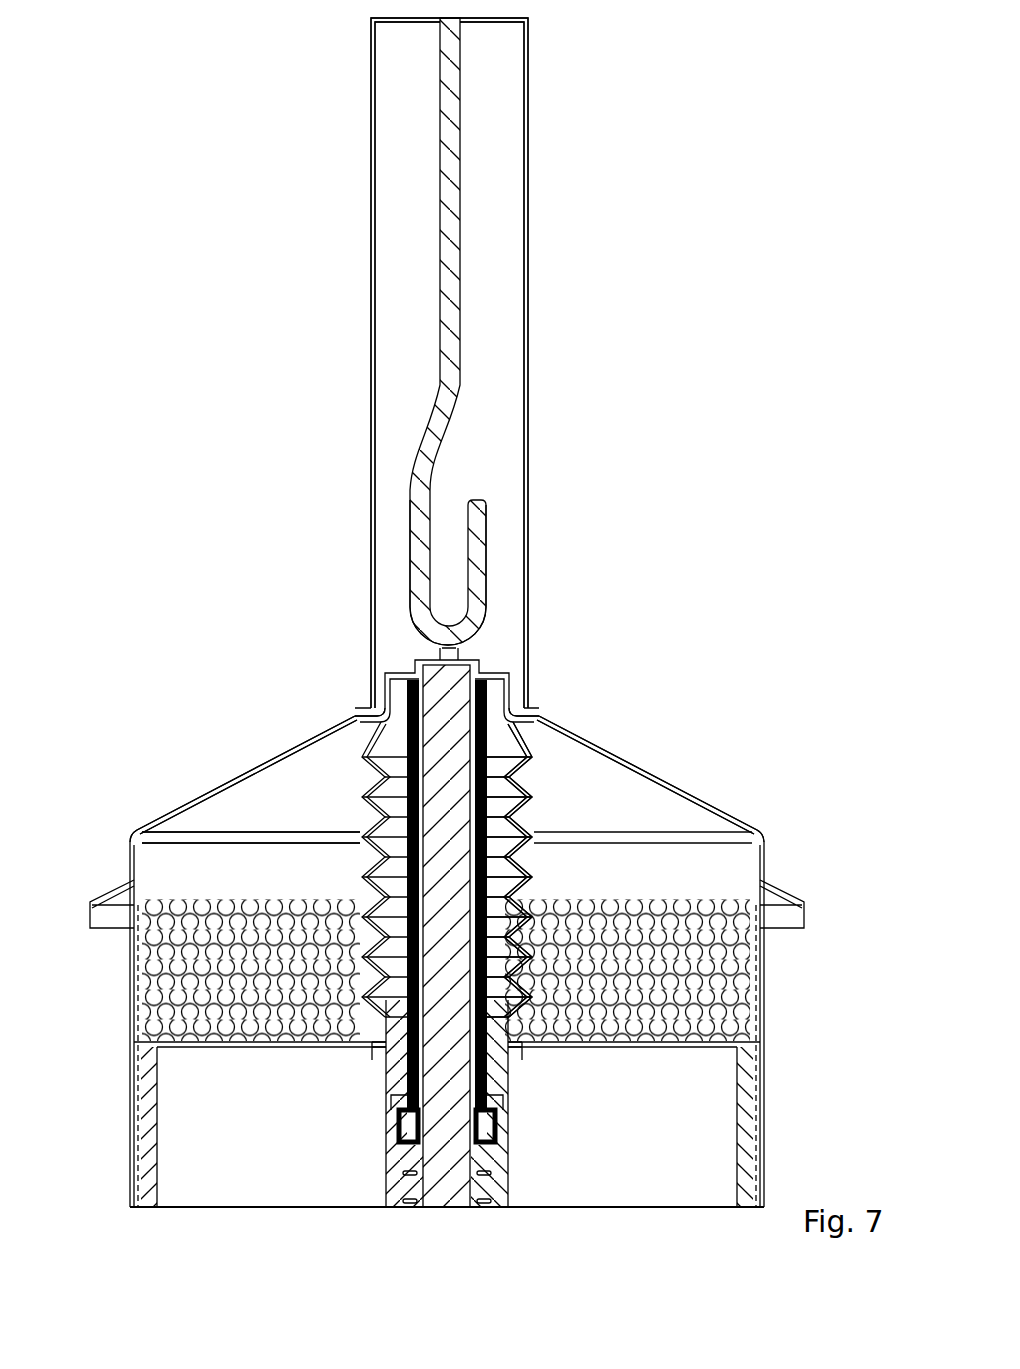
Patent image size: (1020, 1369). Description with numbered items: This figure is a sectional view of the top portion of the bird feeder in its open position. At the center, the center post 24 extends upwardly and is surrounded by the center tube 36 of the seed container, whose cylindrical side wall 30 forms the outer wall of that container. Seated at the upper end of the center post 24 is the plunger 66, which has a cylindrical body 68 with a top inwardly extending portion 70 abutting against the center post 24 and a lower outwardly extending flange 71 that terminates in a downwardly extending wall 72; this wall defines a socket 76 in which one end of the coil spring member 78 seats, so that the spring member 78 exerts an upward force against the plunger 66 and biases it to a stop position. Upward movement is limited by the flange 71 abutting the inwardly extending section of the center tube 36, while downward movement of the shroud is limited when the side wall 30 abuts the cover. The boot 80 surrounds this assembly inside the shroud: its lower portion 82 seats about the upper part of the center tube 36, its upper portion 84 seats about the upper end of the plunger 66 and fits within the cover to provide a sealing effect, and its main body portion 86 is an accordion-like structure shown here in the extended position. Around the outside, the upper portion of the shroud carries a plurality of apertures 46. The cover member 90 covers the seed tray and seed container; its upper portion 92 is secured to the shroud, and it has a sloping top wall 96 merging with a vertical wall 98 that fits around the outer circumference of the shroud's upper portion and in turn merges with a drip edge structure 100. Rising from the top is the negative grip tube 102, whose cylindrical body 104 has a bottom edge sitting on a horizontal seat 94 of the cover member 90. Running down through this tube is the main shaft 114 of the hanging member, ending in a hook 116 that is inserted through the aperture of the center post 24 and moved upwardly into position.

The main shaft 114 is at (460, 68).
The cylindrical body 104 is at (528, 120).
The negative grip tube 102 is at (535, 250).
The hook 116 is at (425, 560).
The horizontal seat 94 is at (368, 712).
The top inwardly extending portion 70 is at (483, 667).
The upper portion 84 is at (366, 740).
The center post 24 is at (432, 1085).
The downwardly extending wall 72 is at (498, 1115).
The lower outwardly extending flange 71 is at (497, 1105).
The plunger 66 is at (395, 792).
The cylindrical body 68 is at (515, 795).
The sloping top wall 96 is at (190, 799).
The cover member 90 is at (246, 734).
The main body portion 86 is at (575, 797).
The vertical wall 98 is at (128, 853).
The boot 80 is at (328, 870).
The upper portion 92 is at (138, 832).
The drip edge structure 100 is at (106, 955).
The apertures 46 is at (660, 925).
The cylindrical side wall 30 is at (728, 1130).
The center tube 36 is at (505, 1137).
The lower portion 82 is at (385, 1067).
The socket 76 is at (398, 1150).
The coil spring member 78 is at (412, 1180).